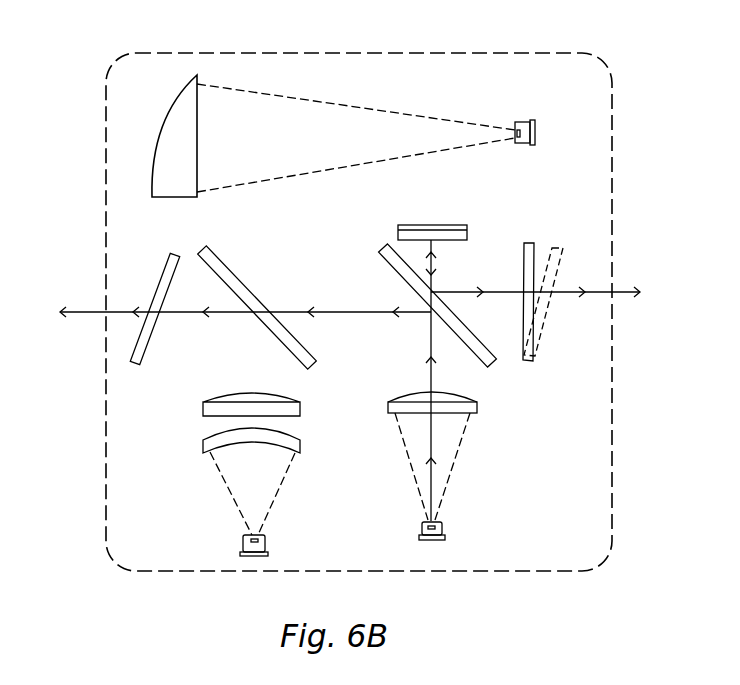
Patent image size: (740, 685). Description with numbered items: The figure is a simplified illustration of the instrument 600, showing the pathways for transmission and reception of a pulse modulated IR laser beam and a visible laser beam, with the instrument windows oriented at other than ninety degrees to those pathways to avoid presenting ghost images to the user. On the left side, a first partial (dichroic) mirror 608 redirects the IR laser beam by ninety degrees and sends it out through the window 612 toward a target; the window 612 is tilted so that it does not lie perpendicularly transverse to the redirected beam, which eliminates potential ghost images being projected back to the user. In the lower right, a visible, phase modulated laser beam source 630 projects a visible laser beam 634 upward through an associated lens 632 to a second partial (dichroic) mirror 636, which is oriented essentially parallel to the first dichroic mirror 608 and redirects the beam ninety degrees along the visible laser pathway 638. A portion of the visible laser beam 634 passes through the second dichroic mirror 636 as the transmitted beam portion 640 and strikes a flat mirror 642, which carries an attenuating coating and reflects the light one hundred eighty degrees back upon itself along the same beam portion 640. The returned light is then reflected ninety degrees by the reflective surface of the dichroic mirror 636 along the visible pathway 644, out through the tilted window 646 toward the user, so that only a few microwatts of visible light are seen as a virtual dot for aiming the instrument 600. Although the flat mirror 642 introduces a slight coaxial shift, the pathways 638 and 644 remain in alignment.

The instrument 600 is at (534, 53).
The first partial mirror 608 is at (228, 270).
The window 612 is at (162, 273).
The visible laser beam source 630 is at (444, 529).
The lens 632 is at (477, 408).
The visible laser beam 634 is at (429, 375).
The second partial mirror 636 is at (477, 363).
The visible laser pathway 638 is at (298, 309).
The reflected light beam 640 is at (436, 262).
The mirror 642 is at (445, 225).
The visible pathway 644 is at (468, 295).
The window 646 is at (528, 243).